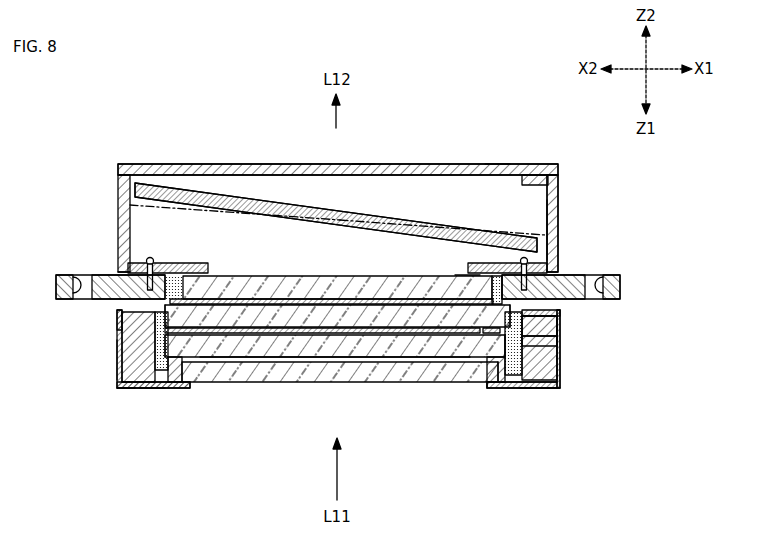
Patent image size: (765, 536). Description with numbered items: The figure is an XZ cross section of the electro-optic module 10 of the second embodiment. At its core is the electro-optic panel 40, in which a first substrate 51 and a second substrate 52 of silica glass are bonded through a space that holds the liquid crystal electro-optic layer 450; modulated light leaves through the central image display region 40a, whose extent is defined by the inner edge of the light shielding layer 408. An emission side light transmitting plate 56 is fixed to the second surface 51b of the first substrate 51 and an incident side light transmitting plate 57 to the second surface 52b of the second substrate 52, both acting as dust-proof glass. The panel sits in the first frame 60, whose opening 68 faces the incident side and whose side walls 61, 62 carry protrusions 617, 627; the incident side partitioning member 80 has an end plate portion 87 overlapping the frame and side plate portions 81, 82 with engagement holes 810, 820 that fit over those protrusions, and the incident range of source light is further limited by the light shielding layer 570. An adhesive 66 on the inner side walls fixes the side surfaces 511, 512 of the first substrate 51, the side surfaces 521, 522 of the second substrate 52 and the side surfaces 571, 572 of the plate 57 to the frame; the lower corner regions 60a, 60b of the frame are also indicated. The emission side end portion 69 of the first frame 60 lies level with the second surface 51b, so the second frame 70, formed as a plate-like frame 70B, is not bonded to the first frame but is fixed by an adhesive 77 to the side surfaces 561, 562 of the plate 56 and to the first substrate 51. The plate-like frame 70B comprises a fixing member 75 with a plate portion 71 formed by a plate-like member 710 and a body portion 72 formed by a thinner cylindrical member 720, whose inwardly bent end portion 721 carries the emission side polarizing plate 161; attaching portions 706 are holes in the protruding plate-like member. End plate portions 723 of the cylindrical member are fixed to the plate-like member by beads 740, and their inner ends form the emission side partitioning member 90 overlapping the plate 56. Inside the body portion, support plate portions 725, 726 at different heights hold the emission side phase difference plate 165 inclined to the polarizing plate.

The electro-optic module 10 is at (561, 139).
The electro-optic panel 40 is at (410, 456).
The image display region 40a is at (462, 82).
The first substrate 51 is at (355, 327).
The second surface of the first substrate 51b is at (331, 301).
The second substrate 52 is at (385, 357).
The second surface of the second substrate 52b is at (325, 357).
The emission side light transmitting plate 56 is at (284, 300).
The incident side light transmitting plate 57 is at (412, 382).
The first frame 60 is at (133, 392).
The frame bottom 60a is at (152, 390).
The frame corner 60b is at (128, 388).
The side wall 61 is at (558, 348).
The side wall 62 is at (115, 348).
The adhesive 66 is at (115, 365).
The opening 68 is at (193, 384).
The emission side end portion 69 is at (565, 277).
The second frame 70 is at (647, 167).
The plate-like frame 70B is at (384, 188).
The plate portion 71 is at (562, 253).
The plate-like member 710 is at (552, 223).
The body portion 72 is at (560, 194).
The cylindrical member 720 is at (338, 169).
The end portion 721 is at (536, 175).
The end plate portion 723 is at (200, 267).
The support plate portion 725 is at (522, 238).
The support plate portion 726 is at (140, 207).
The beads 740 is at (152, 262).
The fixing member 75 is at (565, 231).
The adhesive 77 is at (465, 278).
The incident side partitioning member 80 is at (493, 402).
The side plate portion 81 is at (558, 329).
The side plate portion 82 is at (117, 313).
The end plate portion 87 is at (522, 390).
The emission side partitioning member 90 is at (336, 217).
The emission side polarizing plate 161 is at (497, 164).
The emission side phase difference plate 165 is at (362, 164).
The light shielding layer 408 is at (233, 300).
The electro-optic layer 450 is at (297, 333).
The side surface 511 is at (555, 316).
The side surface 512 is at (117, 326).
The side surface 521 is at (500, 340).
The side surface 522 is at (172, 357).
The side surface 561 is at (487, 285).
The side surface 562 is at (127, 272).
The light shielding layer 570 is at (472, 382).
The side surface 571 is at (540, 388).
The side surface 572 is at (167, 388).
The protrusion 617 is at (556, 340).
The protrusion 627 is at (115, 338).
The attaching portion 706 is at (75, 280).
The engagement hole 810 is at (558, 358).
The engagement hole 820 is at (115, 357).